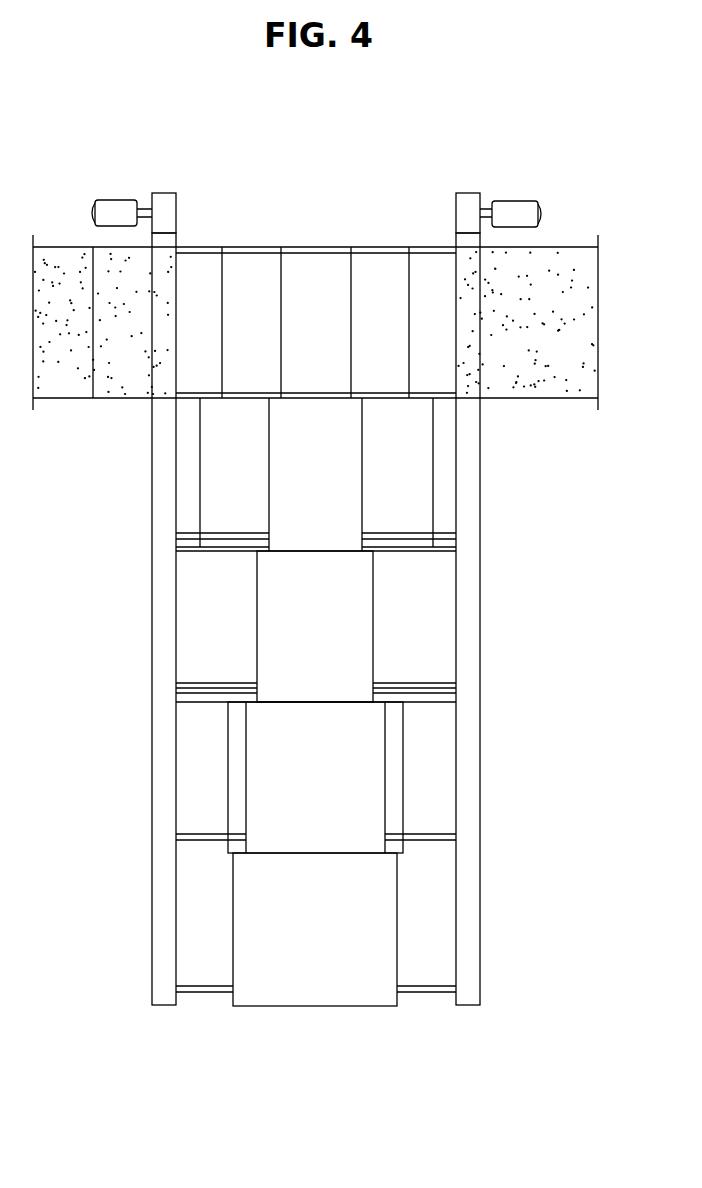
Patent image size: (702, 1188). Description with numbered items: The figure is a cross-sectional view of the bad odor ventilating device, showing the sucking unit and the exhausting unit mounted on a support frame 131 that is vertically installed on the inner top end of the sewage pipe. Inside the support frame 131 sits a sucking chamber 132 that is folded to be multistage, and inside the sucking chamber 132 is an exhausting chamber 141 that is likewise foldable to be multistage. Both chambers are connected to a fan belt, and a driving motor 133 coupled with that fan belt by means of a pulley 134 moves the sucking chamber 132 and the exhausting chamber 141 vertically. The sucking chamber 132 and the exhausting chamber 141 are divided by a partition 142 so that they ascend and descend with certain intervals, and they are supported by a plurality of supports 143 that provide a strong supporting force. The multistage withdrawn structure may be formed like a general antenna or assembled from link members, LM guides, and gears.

The support frame 131 is at (162, 714).
The sucking chamber 132 is at (209, 600).
The driving motor 133 is at (112, 211).
The pulley 134 is at (165, 202).
The exhausting chamber 141 is at (348, 602).
The partition 142 is at (395, 772).
The supports 143 is at (313, 250).